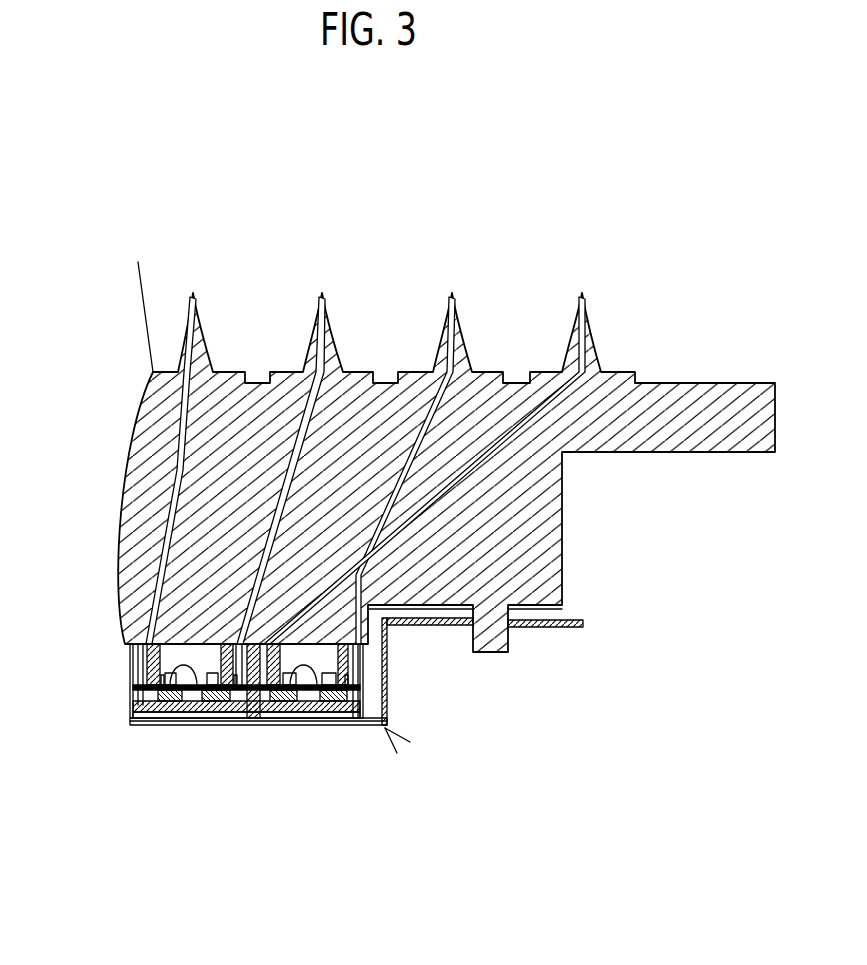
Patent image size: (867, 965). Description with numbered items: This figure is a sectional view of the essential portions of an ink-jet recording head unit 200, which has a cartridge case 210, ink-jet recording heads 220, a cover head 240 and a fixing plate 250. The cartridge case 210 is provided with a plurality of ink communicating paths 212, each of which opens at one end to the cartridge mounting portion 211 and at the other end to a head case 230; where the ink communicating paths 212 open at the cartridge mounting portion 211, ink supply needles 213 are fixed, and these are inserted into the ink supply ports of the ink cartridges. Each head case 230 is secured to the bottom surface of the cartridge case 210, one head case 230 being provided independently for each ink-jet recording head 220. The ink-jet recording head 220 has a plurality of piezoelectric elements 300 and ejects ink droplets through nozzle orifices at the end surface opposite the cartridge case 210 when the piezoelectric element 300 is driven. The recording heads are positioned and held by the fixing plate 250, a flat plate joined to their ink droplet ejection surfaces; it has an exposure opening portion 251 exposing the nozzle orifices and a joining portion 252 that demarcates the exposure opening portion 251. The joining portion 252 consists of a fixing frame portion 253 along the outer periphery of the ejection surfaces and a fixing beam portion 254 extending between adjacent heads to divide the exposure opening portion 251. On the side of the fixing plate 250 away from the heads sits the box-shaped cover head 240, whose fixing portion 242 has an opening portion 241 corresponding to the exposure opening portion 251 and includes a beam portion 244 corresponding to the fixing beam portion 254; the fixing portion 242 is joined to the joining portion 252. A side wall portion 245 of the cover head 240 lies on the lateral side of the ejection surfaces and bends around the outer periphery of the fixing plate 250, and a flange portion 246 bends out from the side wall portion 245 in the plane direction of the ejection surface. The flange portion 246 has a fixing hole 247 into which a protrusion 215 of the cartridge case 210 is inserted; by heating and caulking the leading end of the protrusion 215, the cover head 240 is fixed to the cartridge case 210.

The ink-jet recording head unit 200 is at (388, 527).
The cartridge case 210 is at (718, 385).
The cartridge mounting portion 211 is at (543, 373).
The ink communicating path 212 is at (333, 360).
The ink supply needle 213 is at (318, 307).
The protrusion 215 is at (510, 643).
The ink-jet recording head 220 is at (138, 693).
The head case 230 is at (129, 664).
The cover head 240 is at (397, 730).
The opening portion 241 is at (238, 728).
The fixing portion 242 is at (252, 725).
The beam portion 244 is at (250, 767).
The side wall portion 245 is at (385, 681).
The flange portion 246 is at (580, 618).
The fixing hole 247 is at (517, 628).
The fixing plate 250 is at (127, 718).
The exposure opening portion 251 is at (158, 763).
The joining portion 252 is at (422, 862).
The fixing frame portion 253 is at (365, 728).
The fixing beam portion 254 is at (300, 738).
The piezoelectric element 300 is at (210, 727).